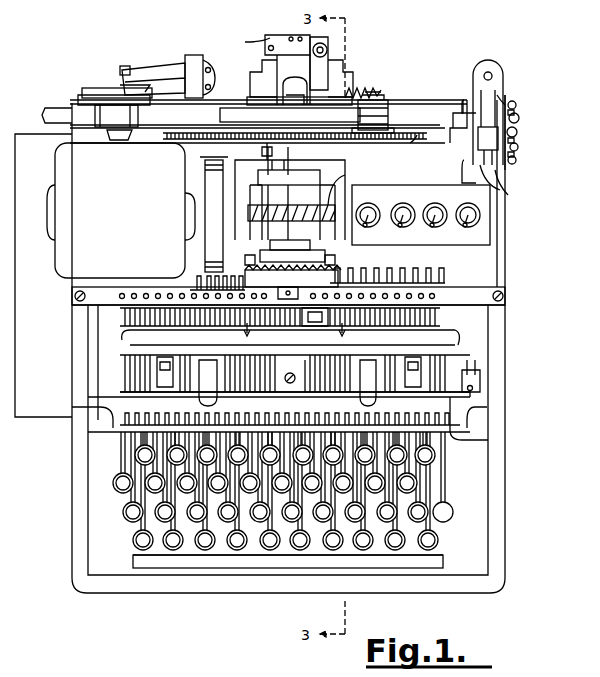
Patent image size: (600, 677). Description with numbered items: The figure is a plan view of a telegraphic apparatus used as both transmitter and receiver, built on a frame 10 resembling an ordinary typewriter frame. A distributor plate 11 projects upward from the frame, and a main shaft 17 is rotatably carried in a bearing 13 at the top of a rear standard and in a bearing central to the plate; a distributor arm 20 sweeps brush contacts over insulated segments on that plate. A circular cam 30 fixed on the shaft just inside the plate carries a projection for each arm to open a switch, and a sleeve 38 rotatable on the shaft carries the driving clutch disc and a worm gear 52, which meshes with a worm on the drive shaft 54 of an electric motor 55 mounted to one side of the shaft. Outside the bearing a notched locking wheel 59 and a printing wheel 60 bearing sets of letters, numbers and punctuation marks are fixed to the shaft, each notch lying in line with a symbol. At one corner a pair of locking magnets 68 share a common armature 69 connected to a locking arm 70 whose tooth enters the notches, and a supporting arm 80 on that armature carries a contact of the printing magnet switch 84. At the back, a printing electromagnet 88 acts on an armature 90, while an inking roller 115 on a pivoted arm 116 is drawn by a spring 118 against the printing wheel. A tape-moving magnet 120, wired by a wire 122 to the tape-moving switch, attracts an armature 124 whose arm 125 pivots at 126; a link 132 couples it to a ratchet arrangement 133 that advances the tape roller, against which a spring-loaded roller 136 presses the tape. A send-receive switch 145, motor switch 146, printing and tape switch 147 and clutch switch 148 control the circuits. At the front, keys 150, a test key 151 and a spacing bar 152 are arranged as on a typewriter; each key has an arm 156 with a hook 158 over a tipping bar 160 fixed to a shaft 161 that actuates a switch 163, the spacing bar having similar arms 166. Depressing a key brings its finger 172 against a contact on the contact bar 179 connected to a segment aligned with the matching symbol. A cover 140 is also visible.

The frame 10 is at (500, 345).
The distributor plate 11 is at (308, 380).
The bearing 13 is at (262, 150).
The main shaft 17 is at (295, 392).
The distributor arm 20 is at (365, 360).
The circular cam 30 is at (290, 320).
The sleeve 38 is at (270, 195).
The worm gear 52 is at (345, 175).
The drive shaft 54 is at (228, 160).
The electric motor 55 is at (65, 265).
The notched locking wheel 59 is at (413, 140).
The printing wheel 60 is at (218, 112).
The locking magnets 68 is at (505, 100).
The armature 69 is at (505, 195).
The locking arm 70 is at (450, 138).
The supporting arm 80 is at (518, 118).
The printing magnet switch 84 is at (503, 62).
The printing electromagnet 88 is at (285, 40).
The armature 90 is at (330, 66).
The inking roller 115 is at (388, 118).
The arm 116 is at (388, 100).
The spring 118 is at (355, 88).
The tape-moving magnet 120 is at (245, 65).
The wire 122 is at (285, 38).
The armature 124 is at (195, 60).
The arm 125 is at (158, 68).
The pivot 126 is at (124, 66).
The link 132 is at (112, 88).
The ratchet arrangement 133 is at (100, 95).
The spring-loaded roller 136 is at (95, 115).
The cover 140 is at (45, 385).
The send-receive switch 145 is at (478, 215).
The motor switch 146 is at (442, 227).
The printing and tape switch 147 is at (410, 227).
The clutch switch 148 is at (362, 227).
The keys 150 is at (238, 535).
The test key 151 is at (453, 512).
The spacing bar 152 is at (157, 560).
The arm 156 is at (118, 455).
The hook 158 is at (122, 415).
The tipping bar 160 is at (470, 440).
The shaft 161 is at (485, 388).
The switch 163 is at (480, 375).
The arms 166 is at (410, 555).
The finger 172 is at (445, 275).
The contact bar 179 is at (468, 298).